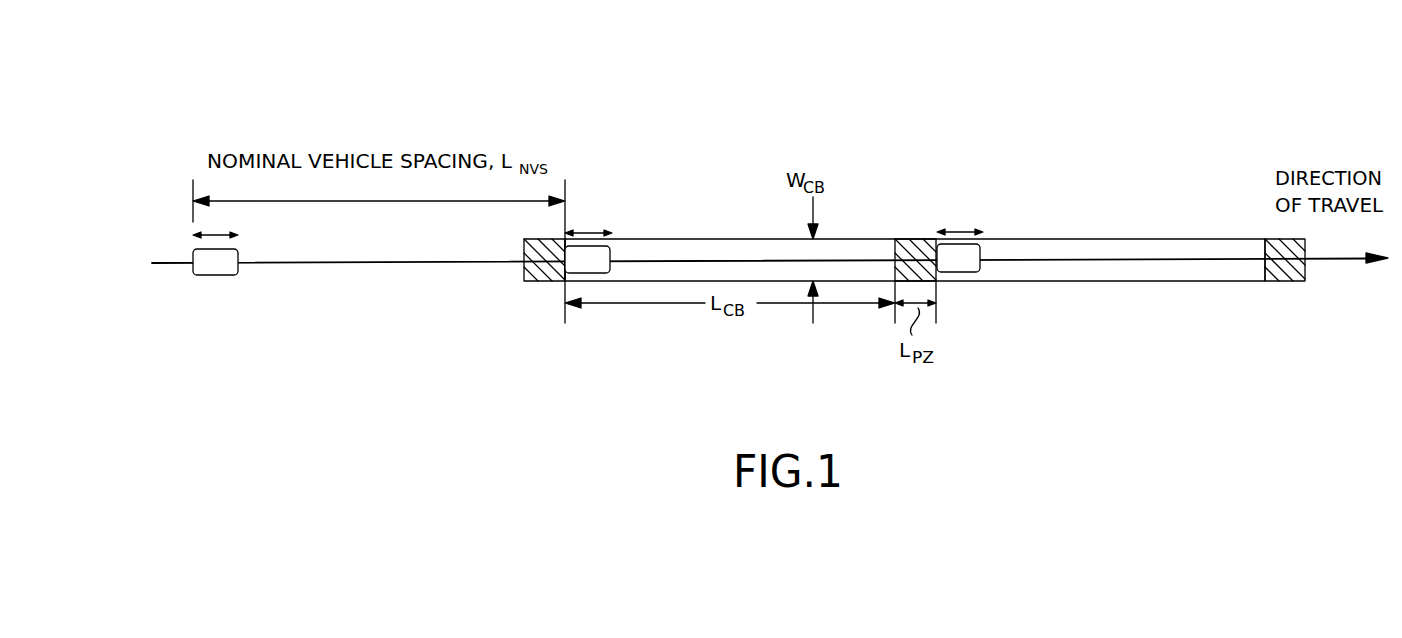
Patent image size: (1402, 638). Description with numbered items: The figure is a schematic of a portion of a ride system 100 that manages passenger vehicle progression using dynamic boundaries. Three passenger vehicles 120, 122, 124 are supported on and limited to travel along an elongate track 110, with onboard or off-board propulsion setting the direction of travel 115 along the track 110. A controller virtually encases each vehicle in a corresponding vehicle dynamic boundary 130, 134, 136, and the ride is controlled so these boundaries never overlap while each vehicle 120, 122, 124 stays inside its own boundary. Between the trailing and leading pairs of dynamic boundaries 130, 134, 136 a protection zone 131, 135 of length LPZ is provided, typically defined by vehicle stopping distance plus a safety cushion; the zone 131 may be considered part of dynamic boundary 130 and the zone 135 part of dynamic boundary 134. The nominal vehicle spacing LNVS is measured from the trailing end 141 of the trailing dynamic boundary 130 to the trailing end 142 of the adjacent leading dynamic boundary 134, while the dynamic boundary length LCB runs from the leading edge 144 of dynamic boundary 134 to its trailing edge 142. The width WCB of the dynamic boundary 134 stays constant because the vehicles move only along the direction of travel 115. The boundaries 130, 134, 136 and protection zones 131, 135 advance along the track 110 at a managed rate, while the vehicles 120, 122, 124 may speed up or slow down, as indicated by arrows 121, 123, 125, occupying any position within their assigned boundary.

The ride system 100 is at (1108, 94).
The track 110 is at (172, 264).
The direction of travel 115 is at (1340, 260).
The passenger vehicle 120 is at (232, 276).
The vehicle movement 121 is at (218, 231).
The passenger vehicle 122 is at (595, 274).
The vehicle movement 123 is at (588, 231).
The passenger vehicle 124 is at (965, 273).
The vehicle movement 125 is at (964, 232).
The dynamic boundary 130 is at (386, 297).
The protection zone 131 is at (546, 302).
The dynamic boundary 134 is at (703, 234).
The protection zone 135 is at (909, 232).
The dynamic boundary 136 is at (1143, 302).
The trailing end of dynamic boundary 141 is at (195, 277).
The trailing end of dynamic boundary 142 is at (566, 245).
The leading end of dynamic boundary 144 is at (897, 243).